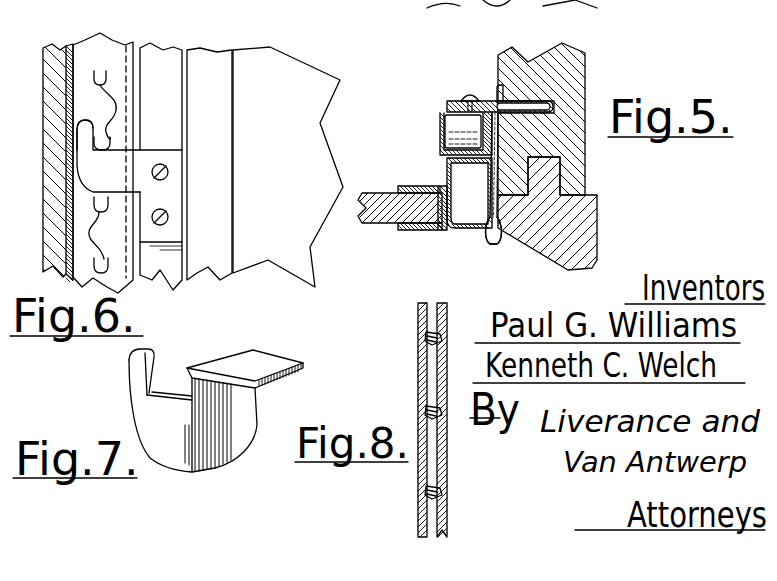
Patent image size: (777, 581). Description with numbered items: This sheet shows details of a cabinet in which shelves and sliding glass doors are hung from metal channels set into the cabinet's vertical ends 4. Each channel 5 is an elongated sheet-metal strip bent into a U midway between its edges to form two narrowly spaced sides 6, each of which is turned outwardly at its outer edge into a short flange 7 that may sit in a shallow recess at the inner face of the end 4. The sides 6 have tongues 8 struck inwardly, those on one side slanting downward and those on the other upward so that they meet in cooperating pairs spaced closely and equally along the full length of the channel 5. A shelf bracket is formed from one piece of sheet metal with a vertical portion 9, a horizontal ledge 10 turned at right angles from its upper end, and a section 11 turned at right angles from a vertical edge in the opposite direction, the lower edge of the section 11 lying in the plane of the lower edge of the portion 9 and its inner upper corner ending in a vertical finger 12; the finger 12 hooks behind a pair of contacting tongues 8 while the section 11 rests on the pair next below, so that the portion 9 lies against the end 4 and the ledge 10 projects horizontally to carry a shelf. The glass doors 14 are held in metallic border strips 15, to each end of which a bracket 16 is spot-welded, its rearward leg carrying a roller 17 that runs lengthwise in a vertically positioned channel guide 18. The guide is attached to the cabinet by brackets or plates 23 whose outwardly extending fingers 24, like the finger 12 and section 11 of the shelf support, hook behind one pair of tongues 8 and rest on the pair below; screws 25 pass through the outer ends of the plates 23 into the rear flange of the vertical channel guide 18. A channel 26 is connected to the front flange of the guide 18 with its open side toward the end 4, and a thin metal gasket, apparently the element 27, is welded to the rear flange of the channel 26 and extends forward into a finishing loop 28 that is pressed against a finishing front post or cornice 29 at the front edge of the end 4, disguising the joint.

In FIG. 6, the vertical ends 4 is at (52, 95).
In FIG. 5, the vertical ends 4 is at (580, 73).
In FIG. 6, the metal channel 5 is at (68, 190).
In FIG. 5, the metal channel 5 is at (548, 107).
In FIG. 6, the sides of channel 6 is at (108, 46).
In FIG. 5, the sides of channel 6 is at (522, 90).
In FIG. 8, the sides of channel 6 is at (436, 377).
In FIG. 5, the flange 7 is at (495, 96).
In FIG. 6, the tongues 8 is at (99, 172).
In FIG. 8, the tongues 8 is at (425, 339).
In FIG. 7, the vertical portion 9 is at (242, 413).
In FIG. 7, the horizontal ledge 10 is at (268, 360).
In FIG. 7, the section 11 is at (173, 447).
In FIG. 7, the vertical finger 12 is at (138, 365).
In FIG. 6, the glass door 14 is at (293, 80).
In FIG. 5, the glass door 14 is at (378, 231).
In FIG. 6, the metallic border strip 15 is at (205, 65).
In FIG. 5, the metallic border strip 15 is at (433, 231).
In FIG. 5, the bracket 16 is at (440, 151).
In FIG. 5, the roller 17 is at (460, 129).
In FIG. 6, the channel guide 18 is at (158, 62).
In FIG. 5, the channel guide 18 is at (447, 107).
In FIG. 6, the bracket plate 23 is at (126, 168).
In FIG. 5, the bracket plate 23 is at (517, 113).
In FIG. 6, the finger 24 is at (80, 135).
In FIG. 6, the screw 25 is at (168, 212).
In FIG. 5, the screw 25 is at (466, 97).
In FIG. 5, the channel 26 is at (453, 215).
In FIG. 5, the cavity 27 is at (469, 193).
In FIG. 5, the finishing loop 28 is at (495, 248).
In FIG. 5, the front post 29 is at (580, 227).